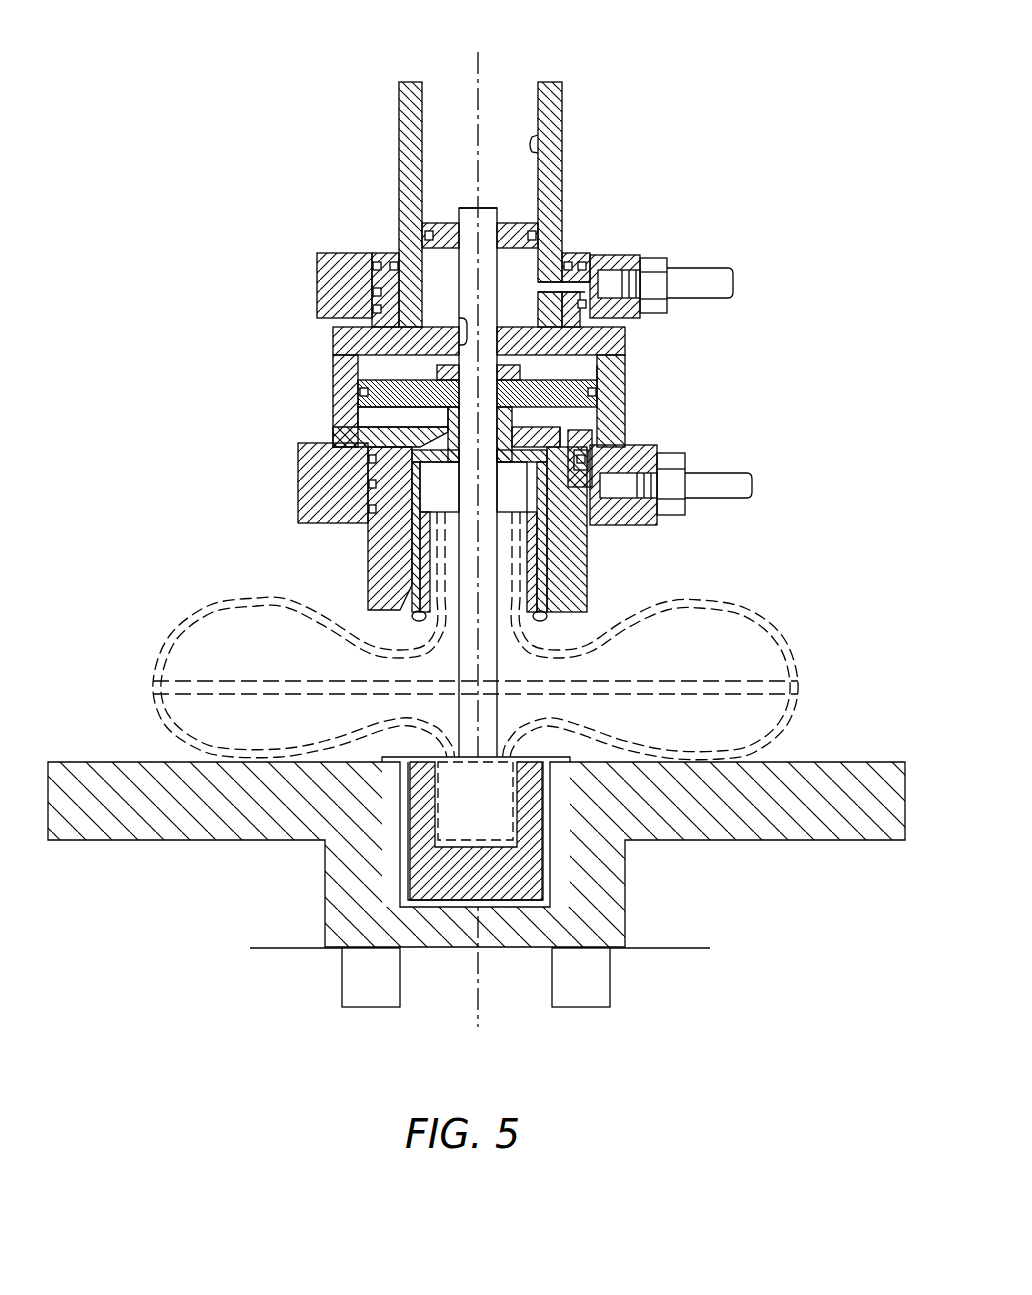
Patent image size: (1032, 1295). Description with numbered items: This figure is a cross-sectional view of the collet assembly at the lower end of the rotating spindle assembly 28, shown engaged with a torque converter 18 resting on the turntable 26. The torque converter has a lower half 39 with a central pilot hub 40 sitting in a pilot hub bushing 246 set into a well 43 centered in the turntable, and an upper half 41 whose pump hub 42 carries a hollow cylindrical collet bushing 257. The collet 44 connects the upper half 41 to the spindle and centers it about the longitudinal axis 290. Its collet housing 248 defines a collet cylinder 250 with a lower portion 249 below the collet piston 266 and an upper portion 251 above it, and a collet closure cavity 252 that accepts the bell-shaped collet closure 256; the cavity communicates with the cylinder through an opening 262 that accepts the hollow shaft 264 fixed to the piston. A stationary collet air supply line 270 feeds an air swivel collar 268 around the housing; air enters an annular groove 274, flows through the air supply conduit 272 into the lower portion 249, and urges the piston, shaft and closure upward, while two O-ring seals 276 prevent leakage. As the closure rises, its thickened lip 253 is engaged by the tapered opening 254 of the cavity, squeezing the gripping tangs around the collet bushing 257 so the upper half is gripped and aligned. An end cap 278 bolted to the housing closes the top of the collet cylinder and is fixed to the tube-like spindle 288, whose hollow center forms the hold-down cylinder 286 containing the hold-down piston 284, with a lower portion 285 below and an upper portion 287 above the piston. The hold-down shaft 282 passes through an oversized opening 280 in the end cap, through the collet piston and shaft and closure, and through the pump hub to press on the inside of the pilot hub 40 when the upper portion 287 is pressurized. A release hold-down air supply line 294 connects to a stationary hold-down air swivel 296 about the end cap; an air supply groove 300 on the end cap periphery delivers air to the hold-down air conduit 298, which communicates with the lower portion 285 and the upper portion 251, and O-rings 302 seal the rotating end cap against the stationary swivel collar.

The torque converter 18 is at (513, 637).
The turntable 26 is at (735, 845).
The spindle assembly 28 is at (282, 165).
The lower half 39 is at (795, 718).
The pilot hub 40 is at (442, 716).
The upper half 41 is at (795, 647).
The pump hub 42 is at (443, 656).
The well 43 is at (410, 880).
The collet 44 is at (333, 390).
The pilot hub bushing 246 is at (417, 858).
The collet housing 248 is at (625, 417).
The lower portion of collet cylinder 249 is at (357, 383).
The collet cylinder 250 is at (608, 355).
The upper portion of collet cylinder 251 is at (365, 360).
The collet closure cavity 252 is at (345, 434).
The thickened lip 253 is at (575, 585).
The tapered opening 254 is at (585, 594).
The collet closure 256 is at (545, 548).
The collet bushing 257 is at (420, 613).
The opening 262 is at (340, 432).
The hollow shaft 264 is at (578, 407).
The collet piston 266 is at (625, 380).
The air swivel collar 268 is at (658, 452).
The collet air supply line 270 is at (734, 512).
The air supply conduit 272 is at (582, 448).
The annular groove 274 is at (345, 492).
The O-ring seals 276 is at (365, 462).
The end cap 278 is at (625, 330).
The opening 280 is at (333, 327).
The hold-down shaft 282 is at (460, 206).
The hold-down piston 284 is at (533, 222).
The lower portion of hold-down cylinder 285 is at (437, 273).
The hold-down cylinder 286 is at (540, 153).
The upper portion of hold-down cylinder 287 is at (437, 135).
The spindle 288 is at (560, 105).
The longitudinal axis 290 is at (483, 63).
The release hold-down air supply line 294 is at (697, 278).
The hold-down air swivel 296 is at (635, 255).
The hold-down air conduit 298 is at (593, 272).
The air supply groove 300 is at (372, 290).
The O-rings 302 is at (372, 265).